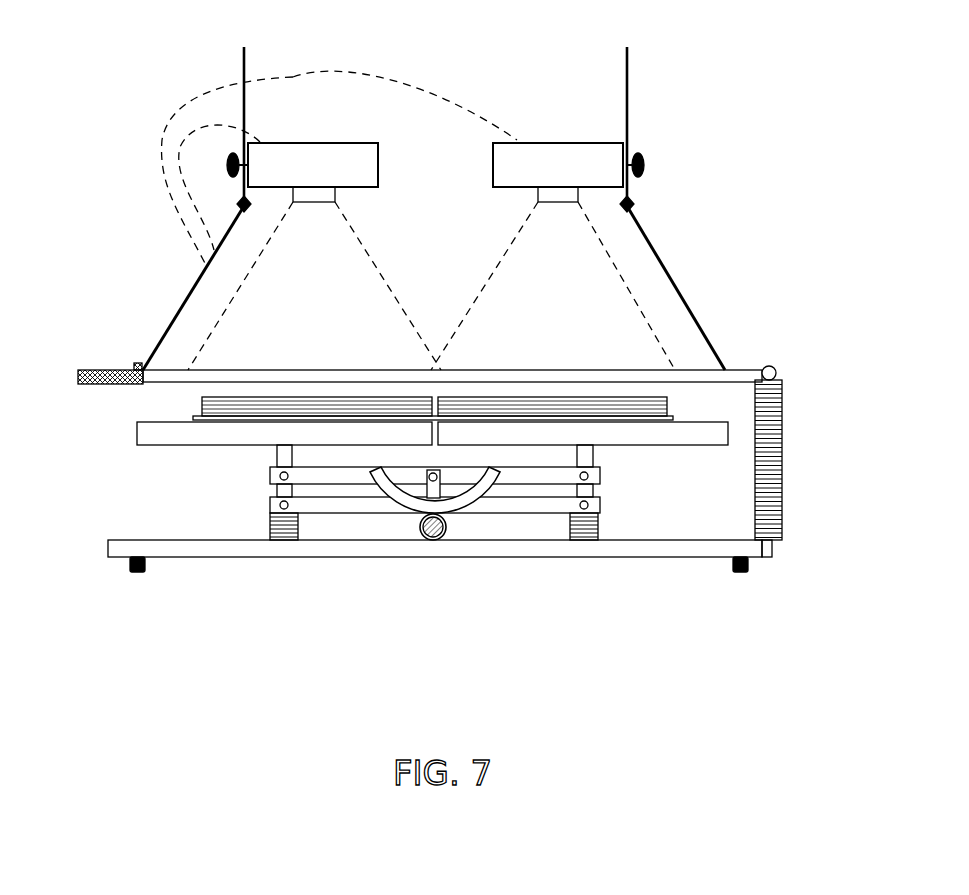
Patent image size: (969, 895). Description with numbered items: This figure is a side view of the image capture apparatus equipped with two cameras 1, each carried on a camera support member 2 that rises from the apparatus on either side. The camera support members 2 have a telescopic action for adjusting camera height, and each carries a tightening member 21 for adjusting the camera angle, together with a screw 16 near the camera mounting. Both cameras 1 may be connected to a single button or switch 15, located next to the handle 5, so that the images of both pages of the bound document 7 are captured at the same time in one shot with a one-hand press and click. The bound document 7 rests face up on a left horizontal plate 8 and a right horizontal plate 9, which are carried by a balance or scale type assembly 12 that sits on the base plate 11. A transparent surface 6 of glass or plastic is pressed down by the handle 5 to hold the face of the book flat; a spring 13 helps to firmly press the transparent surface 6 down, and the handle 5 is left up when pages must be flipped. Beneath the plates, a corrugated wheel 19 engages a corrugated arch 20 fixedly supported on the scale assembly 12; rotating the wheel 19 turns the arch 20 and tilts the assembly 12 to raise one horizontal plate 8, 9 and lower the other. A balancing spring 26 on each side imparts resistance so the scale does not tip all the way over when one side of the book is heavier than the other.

The digital camera 1 is at (335, 132).
The camera support member 2 is at (187, 272).
The handle 5 is at (91, 357).
The transparent surface 6 is at (587, 364).
The bound document 7 is at (186, 405).
The left horizontal plate 8 is at (694, 453).
The right horizontal plate 9 is at (126, 434).
The base plate 11 is at (623, 561).
The balance/scale type assembly 12 is at (611, 475).
The spring 13 is at (795, 404).
The button (switch) 15 is at (130, 353).
The screw 16 is at (220, 149).
The corrugated wheel 19 is at (418, 538).
The corrugated arch 20 is at (483, 506).
The tightening member 21 is at (231, 200).
The balancing spring 26 is at (261, 523).